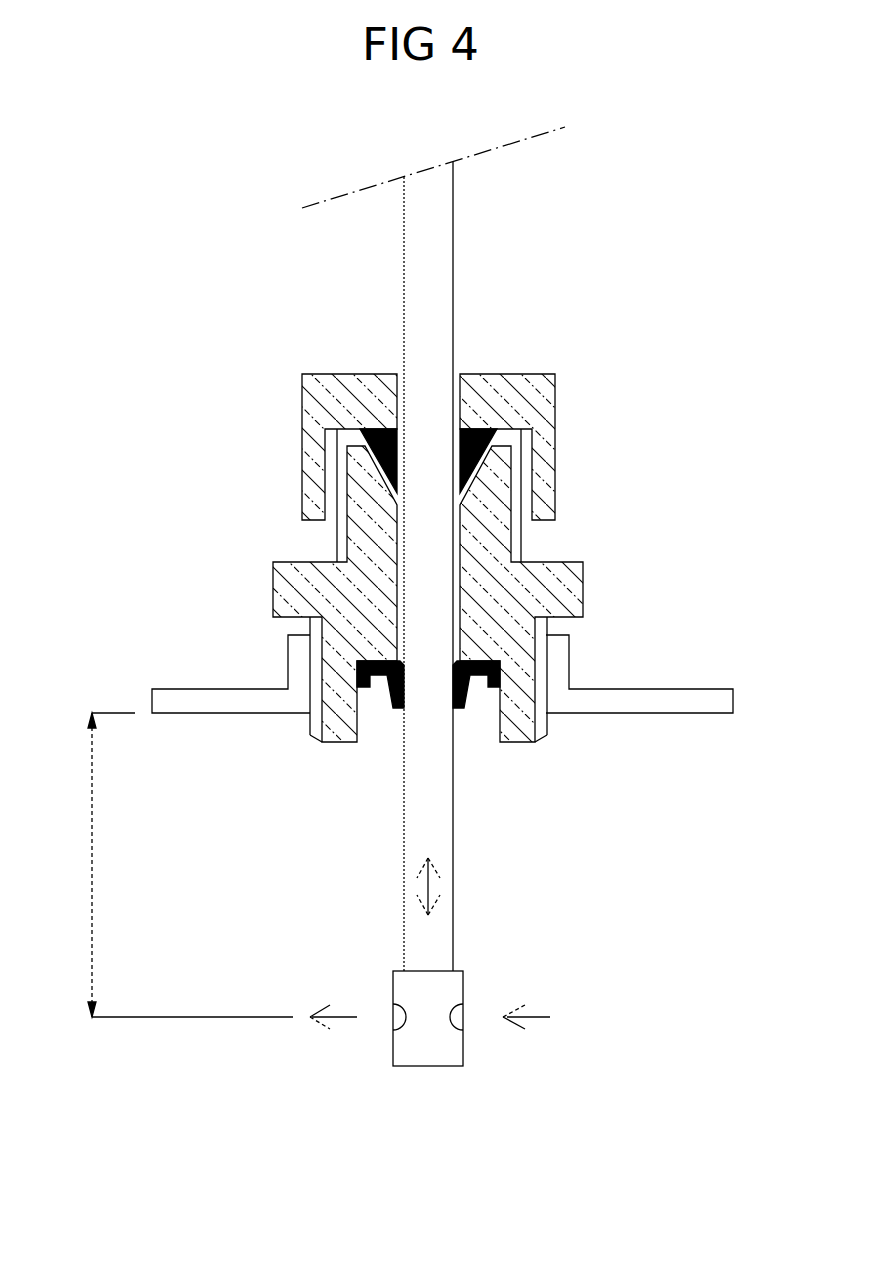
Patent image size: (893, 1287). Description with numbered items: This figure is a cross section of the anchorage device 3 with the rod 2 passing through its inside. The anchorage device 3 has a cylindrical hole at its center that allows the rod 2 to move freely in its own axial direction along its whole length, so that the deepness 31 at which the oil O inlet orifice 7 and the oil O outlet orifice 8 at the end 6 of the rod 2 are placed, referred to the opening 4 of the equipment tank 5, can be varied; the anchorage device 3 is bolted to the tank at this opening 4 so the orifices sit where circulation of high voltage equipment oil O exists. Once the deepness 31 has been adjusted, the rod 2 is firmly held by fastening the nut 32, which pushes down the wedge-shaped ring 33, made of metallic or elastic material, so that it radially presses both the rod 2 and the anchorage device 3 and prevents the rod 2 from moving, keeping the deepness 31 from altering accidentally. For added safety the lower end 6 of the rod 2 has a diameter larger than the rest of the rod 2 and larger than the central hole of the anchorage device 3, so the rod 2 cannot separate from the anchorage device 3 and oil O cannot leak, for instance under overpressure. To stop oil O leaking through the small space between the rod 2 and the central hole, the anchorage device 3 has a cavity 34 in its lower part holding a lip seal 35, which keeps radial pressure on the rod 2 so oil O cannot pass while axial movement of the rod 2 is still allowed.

The rod 2 is at (456, 888).
The anchorage device 3 is at (585, 582).
The opening 4 is at (288, 662).
The equipment tank 5 is at (645, 687).
The end of the rod 6 is at (415, 1067).
The inlet orifice 7 is at (464, 1015).
The outlet orifice 8 is at (391, 1015).
The deepness 31 is at (178, 865).
The nut 32 is at (558, 440).
The ring 33 is at (477, 430).
The cavity 34 is at (480, 733).
The lip seal 35 is at (390, 707).
The oil O is at (340, 1030).